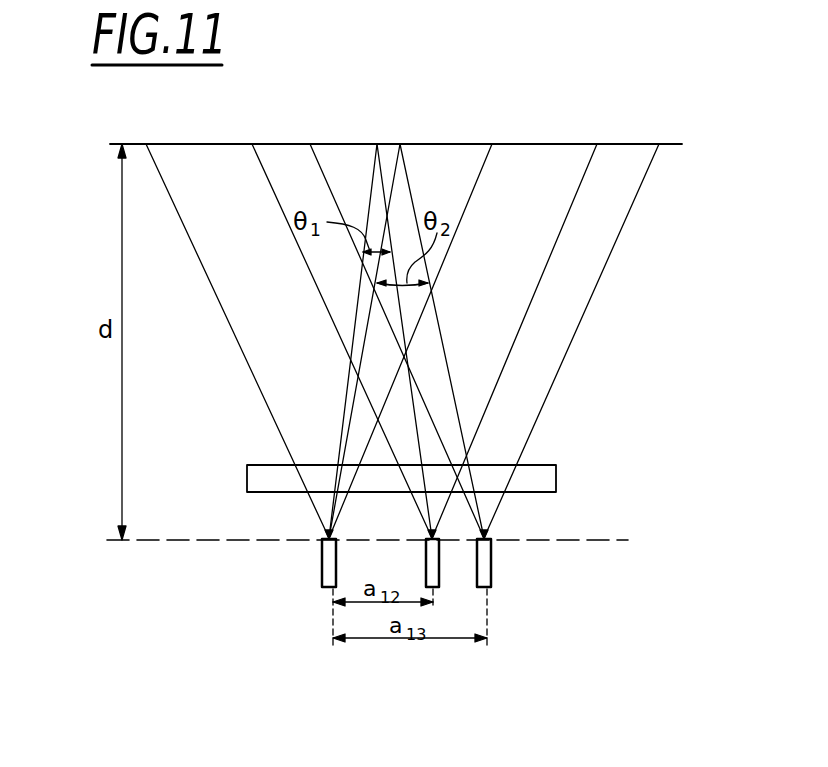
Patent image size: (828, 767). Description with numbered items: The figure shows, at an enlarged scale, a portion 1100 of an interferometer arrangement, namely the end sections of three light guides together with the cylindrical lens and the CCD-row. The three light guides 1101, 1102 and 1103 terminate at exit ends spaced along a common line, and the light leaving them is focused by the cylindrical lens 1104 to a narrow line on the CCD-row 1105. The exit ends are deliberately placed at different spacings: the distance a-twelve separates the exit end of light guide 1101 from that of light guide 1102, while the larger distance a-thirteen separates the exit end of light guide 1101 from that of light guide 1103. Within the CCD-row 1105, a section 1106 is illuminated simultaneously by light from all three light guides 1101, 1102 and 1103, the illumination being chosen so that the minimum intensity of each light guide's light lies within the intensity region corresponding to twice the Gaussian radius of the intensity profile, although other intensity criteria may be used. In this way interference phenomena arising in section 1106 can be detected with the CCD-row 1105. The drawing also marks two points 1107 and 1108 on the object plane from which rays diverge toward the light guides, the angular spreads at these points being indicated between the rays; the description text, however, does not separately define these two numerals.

The portion of the interferometer arrangement 1100 is at (634, 313).
The light guide 1101 is at (322, 567).
The light guide 1102 is at (434, 572).
The light guide 1103 is at (486, 553).
The cylindrical lens 1104 is at (251, 472).
The CCD-row 1105 is at (635, 144).
The section of the CCD-row 1106 is at (463, 144).
The first object point 1107 is at (370, 185).
The second object point 1108 is at (400, 190).